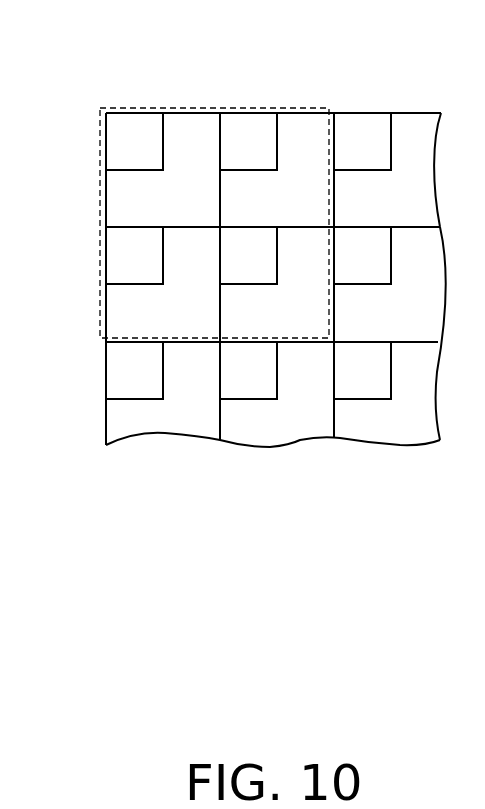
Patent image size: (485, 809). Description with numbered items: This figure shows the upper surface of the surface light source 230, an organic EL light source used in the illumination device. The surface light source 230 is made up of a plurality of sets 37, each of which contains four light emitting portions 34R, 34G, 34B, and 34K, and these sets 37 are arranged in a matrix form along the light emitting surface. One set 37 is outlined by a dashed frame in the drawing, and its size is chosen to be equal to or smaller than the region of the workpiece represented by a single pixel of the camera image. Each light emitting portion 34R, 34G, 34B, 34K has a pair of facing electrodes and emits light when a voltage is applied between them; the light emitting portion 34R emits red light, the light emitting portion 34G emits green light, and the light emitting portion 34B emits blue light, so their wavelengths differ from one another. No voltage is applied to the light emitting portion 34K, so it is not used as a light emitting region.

The surface light source 230 is at (88, 102).
The light emitting portion 34G is at (137, 128).
The light emitting portion 34R is at (250, 128).
The light emitting portion 34B is at (120, 260).
The light emitting portion 34K is at (237, 273).
The set 37 is at (307, 106).